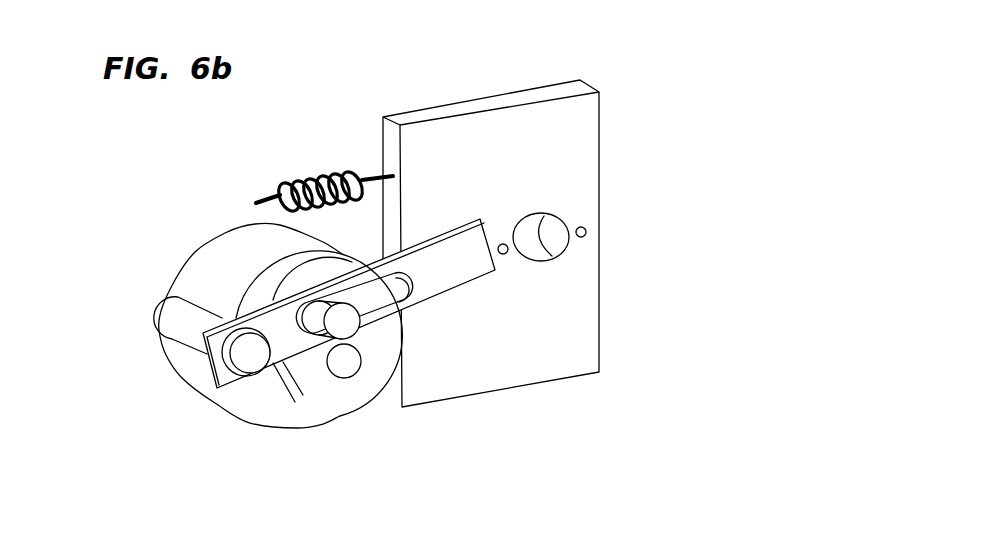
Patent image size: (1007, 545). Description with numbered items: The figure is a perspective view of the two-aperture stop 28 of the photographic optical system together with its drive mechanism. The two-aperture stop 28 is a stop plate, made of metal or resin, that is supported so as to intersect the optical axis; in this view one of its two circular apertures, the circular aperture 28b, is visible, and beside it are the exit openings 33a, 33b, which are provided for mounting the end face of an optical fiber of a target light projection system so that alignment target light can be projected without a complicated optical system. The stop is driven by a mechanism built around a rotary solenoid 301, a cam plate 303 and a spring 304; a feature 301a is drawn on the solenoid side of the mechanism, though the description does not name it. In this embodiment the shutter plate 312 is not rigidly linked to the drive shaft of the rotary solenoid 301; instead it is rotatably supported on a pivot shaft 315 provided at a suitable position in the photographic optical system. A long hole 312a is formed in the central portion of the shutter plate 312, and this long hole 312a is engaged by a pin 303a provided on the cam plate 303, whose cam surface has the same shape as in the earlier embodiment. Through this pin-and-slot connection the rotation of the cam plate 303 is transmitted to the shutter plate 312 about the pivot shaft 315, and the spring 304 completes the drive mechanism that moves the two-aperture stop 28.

The two-aperture stop 28 is at (700, 98).
The circular aperture 28b is at (563, 222).
The exit opening 33a is at (505, 254).
The exit opening 33b is at (587, 232).
The rotary solenoid 301 is at (213, 254).
The shaft hole of drum 301a is at (345, 366).
The cam plate 303 is at (368, 388).
The pin 303a is at (340, 326).
The spring 304 is at (301, 180).
The shutter plate 312 is at (223, 381).
The long hole 312a is at (408, 285).
The pivot shaft 315 is at (183, 325).